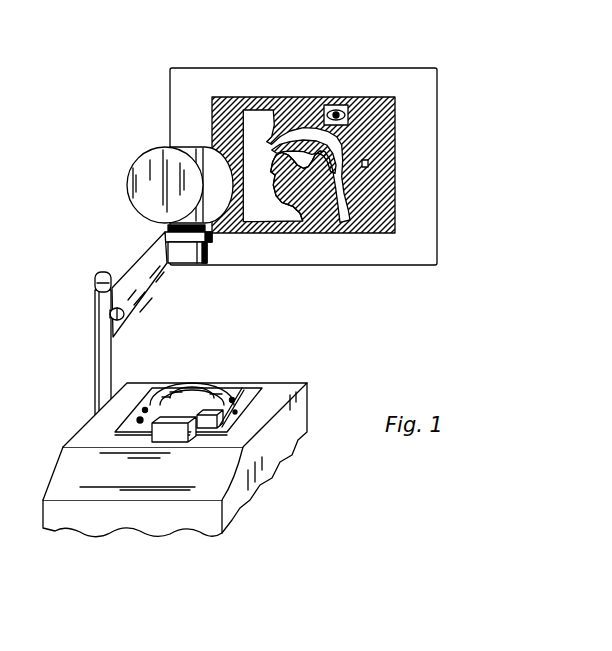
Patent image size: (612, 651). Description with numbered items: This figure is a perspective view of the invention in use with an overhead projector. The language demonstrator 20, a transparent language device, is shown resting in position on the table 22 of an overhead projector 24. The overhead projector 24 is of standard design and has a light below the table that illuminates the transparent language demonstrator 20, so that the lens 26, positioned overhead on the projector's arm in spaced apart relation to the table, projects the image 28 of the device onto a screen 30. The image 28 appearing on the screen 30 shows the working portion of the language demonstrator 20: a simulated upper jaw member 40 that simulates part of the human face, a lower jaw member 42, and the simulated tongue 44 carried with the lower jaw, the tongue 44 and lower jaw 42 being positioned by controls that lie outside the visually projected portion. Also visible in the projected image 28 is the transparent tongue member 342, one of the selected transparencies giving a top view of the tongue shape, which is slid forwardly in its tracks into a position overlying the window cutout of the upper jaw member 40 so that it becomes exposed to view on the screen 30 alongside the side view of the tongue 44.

The language demonstrator 20 is at (262, 391).
The table 22 is at (247, 433).
The overhead projector 24 is at (97, 305).
The lens 26 is at (192, 254).
The image 28 is at (370, 218).
The screen 30 is at (424, 160).
The simulated upper jaw member 40 is at (296, 166).
The lower jaw member 42 is at (284, 186).
The simulated tongue 44 is at (322, 143).
The transparent tongue member 342 is at (340, 106).